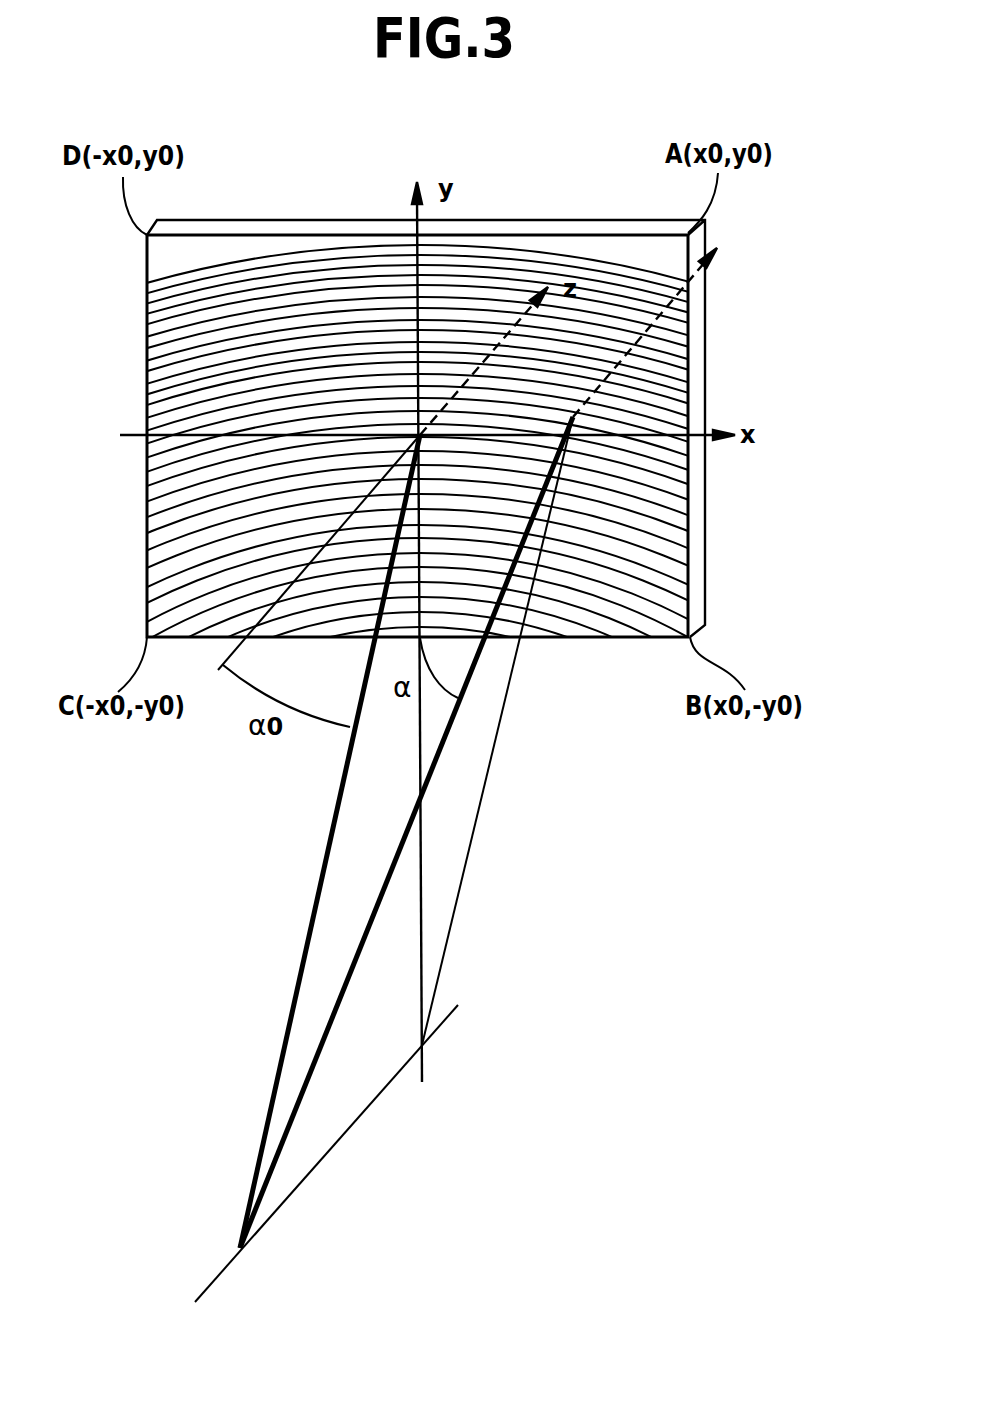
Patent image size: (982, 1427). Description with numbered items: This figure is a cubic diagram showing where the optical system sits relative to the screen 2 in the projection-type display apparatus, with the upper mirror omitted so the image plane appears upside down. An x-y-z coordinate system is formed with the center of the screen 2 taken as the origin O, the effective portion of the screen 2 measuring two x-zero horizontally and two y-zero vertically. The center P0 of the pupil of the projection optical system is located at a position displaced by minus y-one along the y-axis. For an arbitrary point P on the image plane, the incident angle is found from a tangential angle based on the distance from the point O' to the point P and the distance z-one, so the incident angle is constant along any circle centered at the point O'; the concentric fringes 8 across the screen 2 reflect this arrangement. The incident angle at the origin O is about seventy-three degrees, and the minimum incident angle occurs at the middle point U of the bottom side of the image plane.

The screen 2 is at (698, 570).
The interference fringes (hologram pattern) 8 is at (667, 485).
The origin O is at (339, 552).
The arbitrary point P is at (573, 417).
The point O' is at (531, 757).
The center of the pupil P0 is at (242, 1247).
The middle point of the bottom side U is at (375, 638).